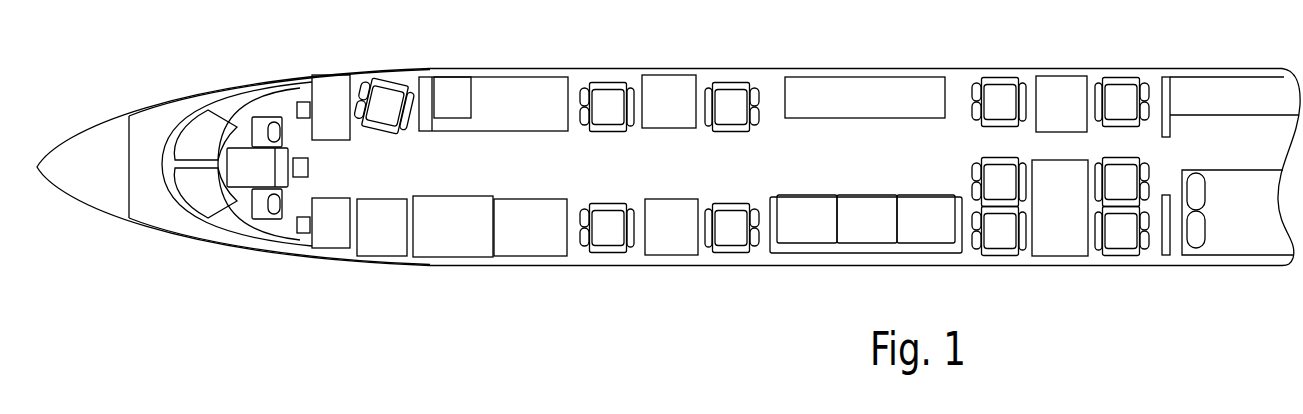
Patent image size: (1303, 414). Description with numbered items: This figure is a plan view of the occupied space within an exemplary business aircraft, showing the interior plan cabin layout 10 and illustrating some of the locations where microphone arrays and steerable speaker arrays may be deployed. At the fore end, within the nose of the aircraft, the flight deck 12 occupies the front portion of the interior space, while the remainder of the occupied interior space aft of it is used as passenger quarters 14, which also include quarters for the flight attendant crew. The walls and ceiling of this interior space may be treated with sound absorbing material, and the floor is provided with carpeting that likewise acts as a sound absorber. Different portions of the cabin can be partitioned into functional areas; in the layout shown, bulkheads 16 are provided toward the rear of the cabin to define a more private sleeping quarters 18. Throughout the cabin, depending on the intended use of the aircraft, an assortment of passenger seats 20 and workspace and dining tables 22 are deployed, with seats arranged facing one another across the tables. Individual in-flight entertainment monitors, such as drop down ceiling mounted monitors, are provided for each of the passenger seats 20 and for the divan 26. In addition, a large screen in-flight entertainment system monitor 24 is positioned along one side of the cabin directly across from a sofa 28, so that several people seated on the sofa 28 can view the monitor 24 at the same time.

The interior plan cabin layout 10 is at (668, 133).
The flight deck 12 is at (237, 124).
The passenger quarters 14 is at (546, 139).
The bulkheads 16 is at (1168, 90).
The sleeping quarters 18 is at (1234, 166).
The passenger seats 20 is at (750, 166).
The workspace and dining tables 22 is at (865, 165).
The large screen in-flight entertainment system monitor 24 is at (865, 98).
The divan 26 is at (493, 104).
The sofa 28 is at (897, 197).